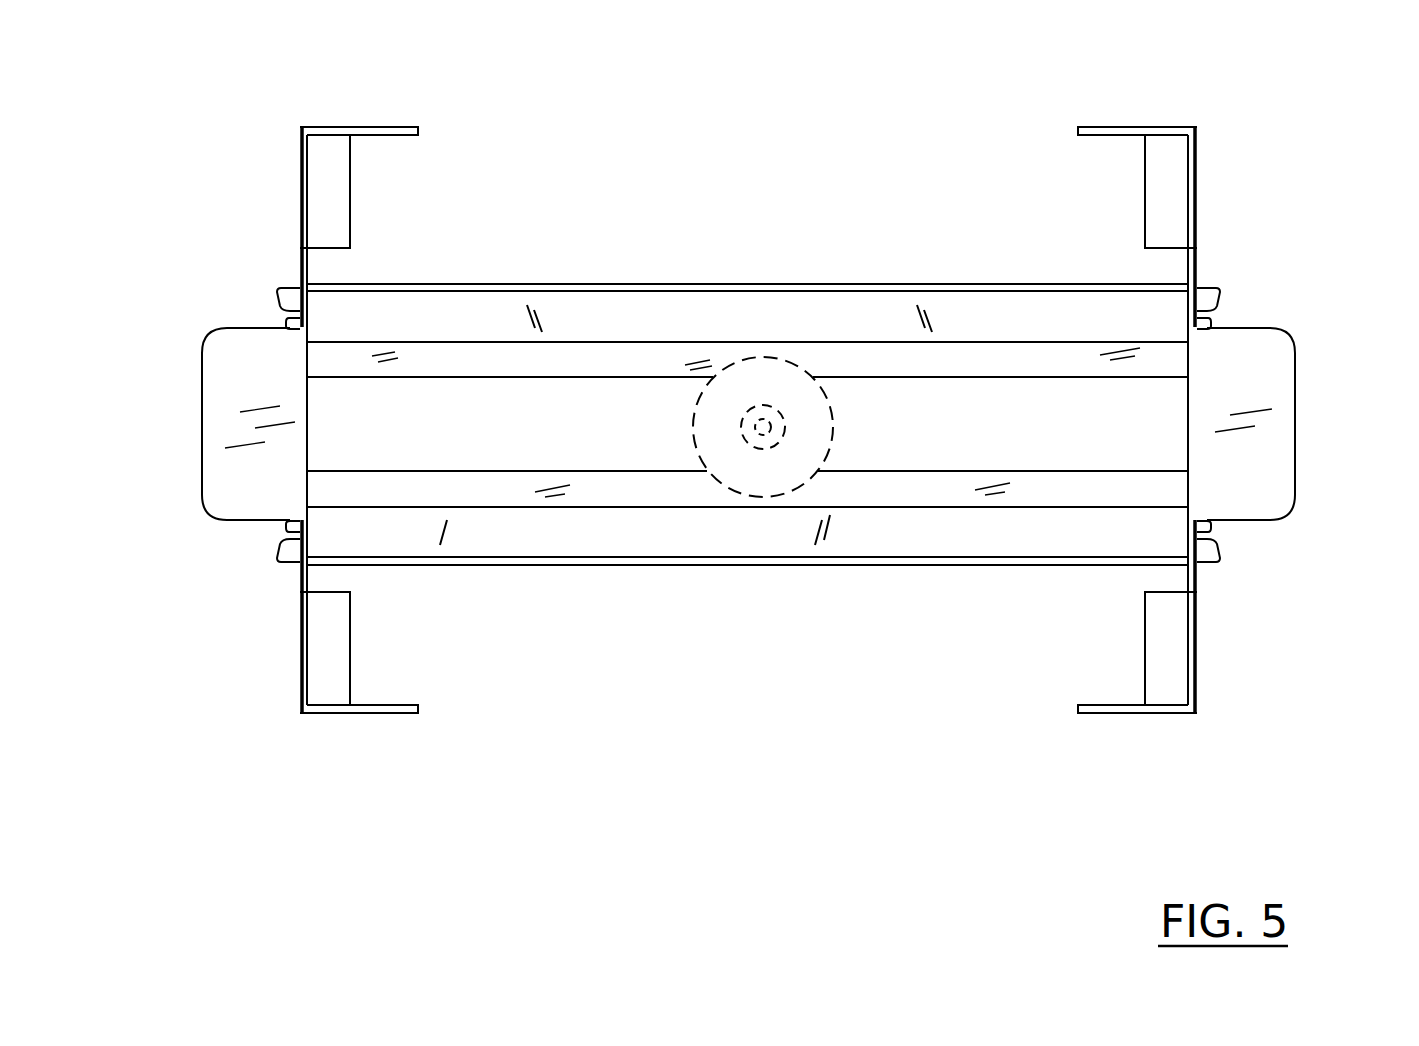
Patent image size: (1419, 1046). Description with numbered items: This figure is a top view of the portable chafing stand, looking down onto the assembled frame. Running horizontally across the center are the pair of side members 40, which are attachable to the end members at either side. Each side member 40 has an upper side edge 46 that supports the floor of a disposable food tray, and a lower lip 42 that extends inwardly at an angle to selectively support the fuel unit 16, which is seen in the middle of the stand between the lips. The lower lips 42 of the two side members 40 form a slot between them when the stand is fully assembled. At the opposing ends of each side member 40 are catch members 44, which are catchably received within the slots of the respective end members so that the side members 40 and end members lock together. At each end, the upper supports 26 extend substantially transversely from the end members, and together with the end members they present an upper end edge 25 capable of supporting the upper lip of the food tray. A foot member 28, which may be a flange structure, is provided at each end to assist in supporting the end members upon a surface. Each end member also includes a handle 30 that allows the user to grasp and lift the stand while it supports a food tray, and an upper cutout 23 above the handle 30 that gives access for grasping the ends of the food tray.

The fuel unit 16 is at (765, 375).
The upper cutout 23 is at (303, 278).
The upper end edge 25 is at (303, 173).
The upper support 26 is at (393, 132).
The foot member 28 is at (332, 202).
The handle 30 is at (218, 403).
The side member 40 is at (682, 284).
The lower lip 42 is at (905, 370).
The catch member 44 is at (287, 322).
The upper side edge 46 is at (957, 287).